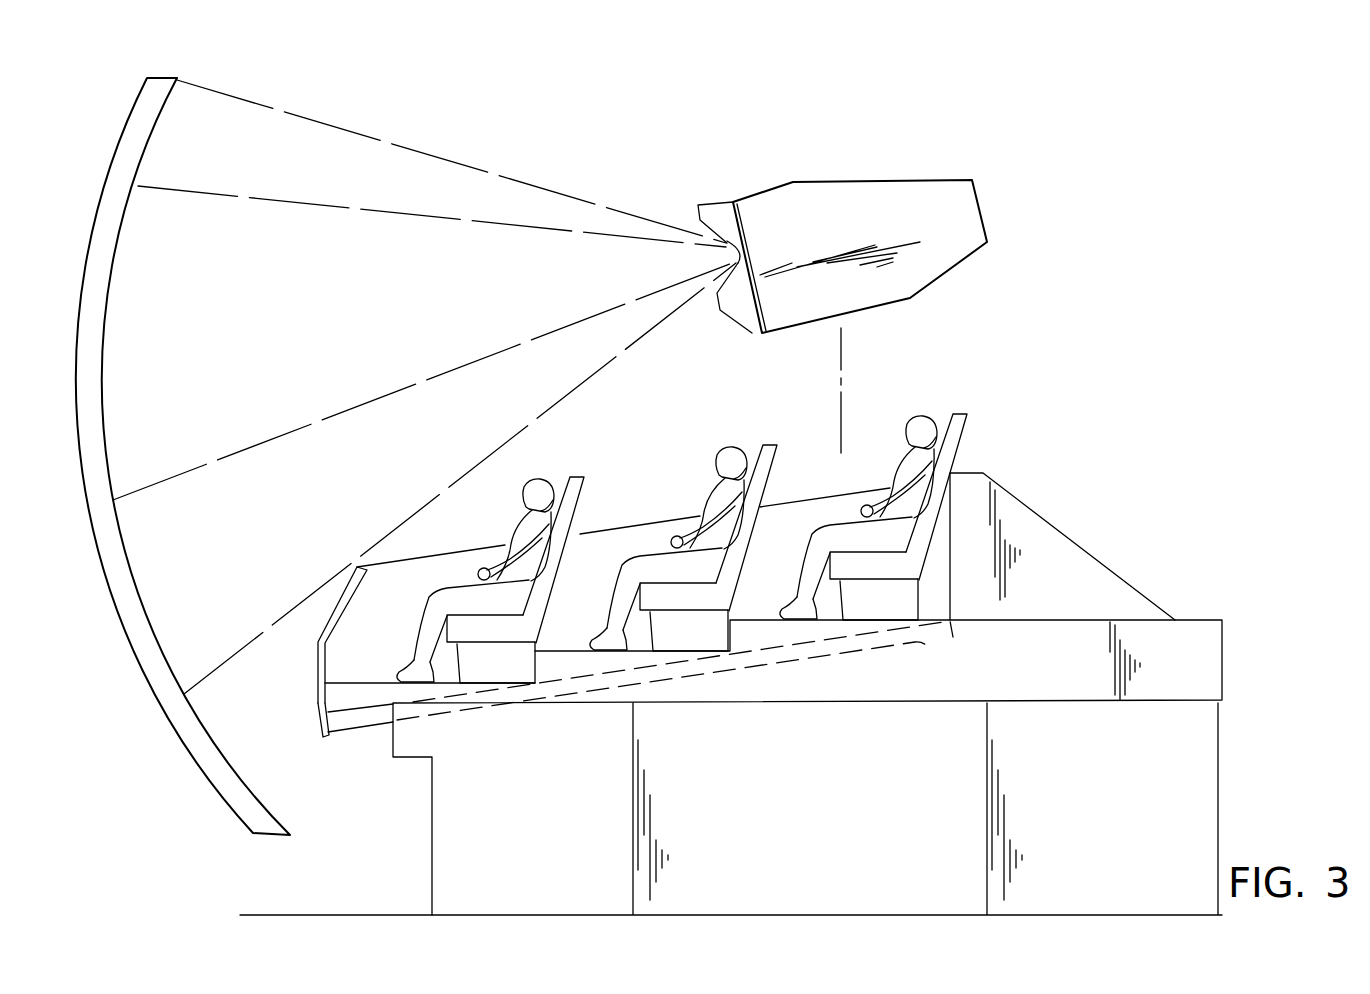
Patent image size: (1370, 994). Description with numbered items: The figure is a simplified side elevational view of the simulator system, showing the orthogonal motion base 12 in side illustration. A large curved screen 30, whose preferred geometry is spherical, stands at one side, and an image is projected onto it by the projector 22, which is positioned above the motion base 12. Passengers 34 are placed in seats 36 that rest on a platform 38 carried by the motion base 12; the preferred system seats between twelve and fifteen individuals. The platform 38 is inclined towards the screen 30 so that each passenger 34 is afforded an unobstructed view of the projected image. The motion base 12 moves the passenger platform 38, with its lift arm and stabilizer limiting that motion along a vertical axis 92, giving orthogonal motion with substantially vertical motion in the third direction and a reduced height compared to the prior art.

The orthogonal motion base 12 is at (1062, 505).
The projector 22 is at (877, 181).
The screen 30 is at (160, 78).
The passengers 34 is at (545, 482).
The seats 36 is at (580, 503).
The platform 38 is at (940, 649).
The vertical axis 92 is at (841, 368).